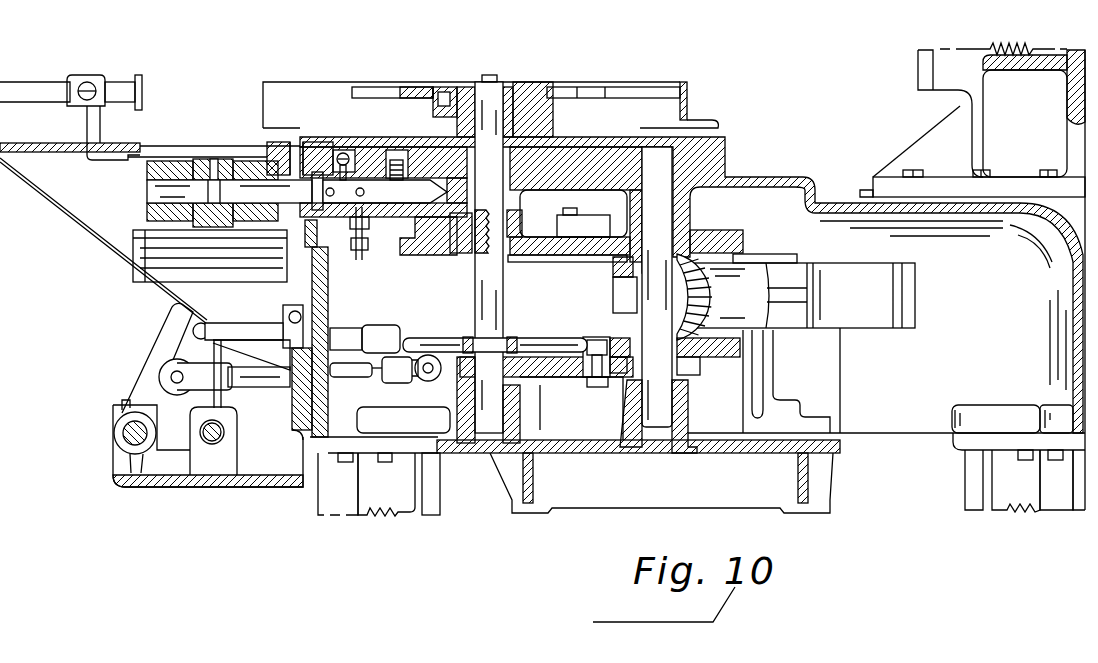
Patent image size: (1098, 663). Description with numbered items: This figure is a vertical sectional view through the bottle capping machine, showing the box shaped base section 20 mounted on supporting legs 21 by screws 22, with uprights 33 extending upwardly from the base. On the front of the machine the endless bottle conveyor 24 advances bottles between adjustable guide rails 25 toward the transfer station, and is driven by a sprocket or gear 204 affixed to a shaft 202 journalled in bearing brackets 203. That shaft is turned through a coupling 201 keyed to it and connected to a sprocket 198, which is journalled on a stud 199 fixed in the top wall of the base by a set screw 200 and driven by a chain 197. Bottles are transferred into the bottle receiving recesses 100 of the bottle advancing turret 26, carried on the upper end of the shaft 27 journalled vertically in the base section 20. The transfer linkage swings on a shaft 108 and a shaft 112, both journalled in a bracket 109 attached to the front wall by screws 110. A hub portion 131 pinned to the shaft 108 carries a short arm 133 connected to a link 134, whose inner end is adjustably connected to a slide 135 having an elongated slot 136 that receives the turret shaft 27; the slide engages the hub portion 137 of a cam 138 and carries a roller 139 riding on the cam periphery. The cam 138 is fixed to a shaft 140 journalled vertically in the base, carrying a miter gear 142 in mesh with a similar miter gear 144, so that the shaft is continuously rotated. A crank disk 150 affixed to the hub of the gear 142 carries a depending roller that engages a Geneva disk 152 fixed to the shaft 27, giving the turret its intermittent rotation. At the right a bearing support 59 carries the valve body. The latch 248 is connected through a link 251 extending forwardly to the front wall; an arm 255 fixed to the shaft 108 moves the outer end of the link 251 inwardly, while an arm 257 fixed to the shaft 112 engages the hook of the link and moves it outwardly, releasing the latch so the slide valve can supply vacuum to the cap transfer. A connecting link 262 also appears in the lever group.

The base section 20 is at (312, 294).
The supporting legs 21 is at (433, 492).
The screws 22 is at (962, 463).
The bottle conveyor 24 is at (236, 282).
The guide rails 25 is at (143, 89).
The bottle advancing turret 26 is at (573, 88).
The shaft 27 is at (505, 302).
The uprights 33 is at (953, 50).
The bearing support 59 is at (773, 330).
The bottle receiving recesses 100 is at (362, 90).
The shaft 108 is at (116, 434).
The bracket 109 is at (200, 441).
The screws 110 is at (292, 409).
The shaft 112 is at (225, 435).
The hub portion 131 is at (122, 418).
The short arm 133 is at (214, 383).
The link 134 is at (350, 378).
The slide 135 is at (588, 381).
The elongated slot 136 is at (536, 379).
The hub portion 137 is at (690, 368).
The cam 138 is at (704, 357).
The roller 139 is at (587, 338).
The shaft 140 is at (665, 432).
The miter gear 142 is at (620, 277).
The miter gear 144 is at (704, 294).
The crank disk 150 is at (752, 229).
The Geneva disk 152 is at (457, 251).
The chain 197 is at (341, 250).
The sprocket 198 is at (344, 152).
The stud 199 is at (405, 215).
The set screw 200 is at (400, 160).
The coupling 201 is at (294, 142).
The shaft 202 is at (147, 195).
The bearing brackets 203 is at (147, 213).
The sprocket or gear 204 is at (223, 159).
The latch 248 is at (800, 262).
The link 251 is at (527, 341).
The arm 255 is at (172, 333).
The arm 257 is at (219, 397).
The connecting link 262 is at (238, 346).